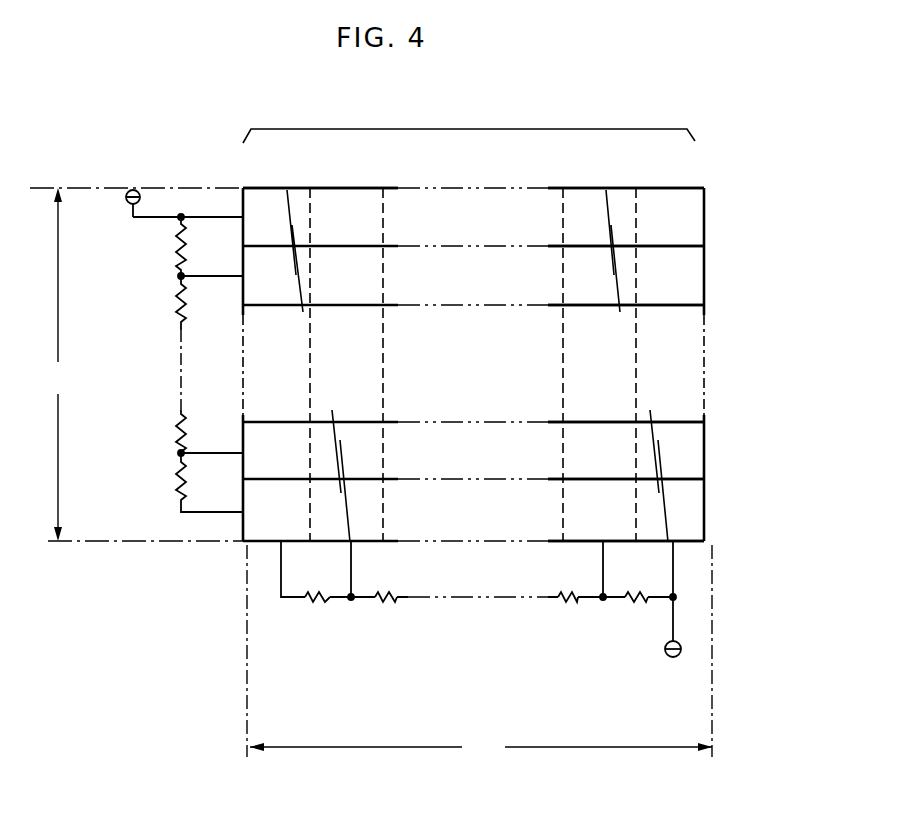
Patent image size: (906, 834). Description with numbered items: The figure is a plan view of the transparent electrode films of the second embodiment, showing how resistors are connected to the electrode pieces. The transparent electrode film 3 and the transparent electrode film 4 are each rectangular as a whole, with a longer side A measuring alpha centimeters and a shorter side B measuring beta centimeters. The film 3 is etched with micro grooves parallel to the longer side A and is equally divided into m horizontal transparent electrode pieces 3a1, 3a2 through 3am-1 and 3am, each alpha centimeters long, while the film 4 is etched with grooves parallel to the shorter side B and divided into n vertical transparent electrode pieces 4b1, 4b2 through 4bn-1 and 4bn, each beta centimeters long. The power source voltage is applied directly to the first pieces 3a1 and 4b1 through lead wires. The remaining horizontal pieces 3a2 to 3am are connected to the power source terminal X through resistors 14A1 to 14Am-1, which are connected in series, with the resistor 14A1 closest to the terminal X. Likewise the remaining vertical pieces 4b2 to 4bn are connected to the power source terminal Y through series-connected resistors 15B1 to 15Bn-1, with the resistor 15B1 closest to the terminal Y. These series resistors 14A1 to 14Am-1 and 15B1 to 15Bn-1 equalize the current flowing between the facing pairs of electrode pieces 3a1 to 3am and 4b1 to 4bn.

The transparent electrode film 3 is at (801, 540).
The transparent electrode film 4 is at (469, 125).
The transparent electrode piece 3a1 is at (702, 217).
The transparent electrode piece 3a2 is at (702, 270).
The transparent electrode piece 3am-1 is at (702, 448).
The transparent electrode piece 3am is at (697, 508).
The transparent electrode piece 4bn is at (258, 196).
The transparent electrode piece 4bn-1 is at (342, 184).
The transparent electrode piece 4b2 is at (592, 193).
The transparent electrode piece 4b1 is at (660, 193).
The resistor 14A1 is at (180, 240).
The resistor 14Am-1 is at (178, 481).
The resistor 15Bn-1 is at (316, 600).
The resistor 15B1 is at (633, 600).
The longer side A is at (388, 188).
The shorter side B is at (704, 412).
The power source terminal X is at (126, 197).
The power source terminal Y is at (668, 657).